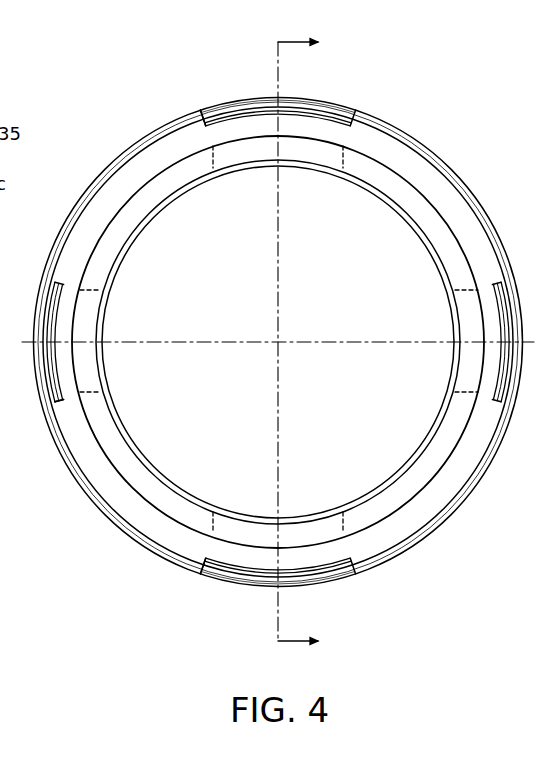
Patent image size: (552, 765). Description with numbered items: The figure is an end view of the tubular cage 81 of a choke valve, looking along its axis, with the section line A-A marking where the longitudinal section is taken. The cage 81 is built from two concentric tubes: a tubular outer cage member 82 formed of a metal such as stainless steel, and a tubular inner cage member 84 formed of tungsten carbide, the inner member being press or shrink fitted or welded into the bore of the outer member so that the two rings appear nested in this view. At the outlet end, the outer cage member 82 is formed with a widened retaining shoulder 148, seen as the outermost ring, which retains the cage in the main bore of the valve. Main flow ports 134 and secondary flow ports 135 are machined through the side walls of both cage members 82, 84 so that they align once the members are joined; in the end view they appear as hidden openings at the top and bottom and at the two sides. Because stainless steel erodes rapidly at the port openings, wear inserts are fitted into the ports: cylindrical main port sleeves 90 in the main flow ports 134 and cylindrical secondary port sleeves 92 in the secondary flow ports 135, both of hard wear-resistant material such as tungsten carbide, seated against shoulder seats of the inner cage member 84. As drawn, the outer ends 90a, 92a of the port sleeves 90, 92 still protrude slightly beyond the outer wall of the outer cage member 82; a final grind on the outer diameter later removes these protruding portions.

The cage 81 is at (272, 342).
The tubular outer cage member 82 is at (414, 200).
The tubular inner cage member 84 is at (410, 165).
The main port sleeve 90 is at (344, 105).
The outer end of main port sleeve 90a is at (207, 108).
The secondary port sleeve 92 is at (50, 280).
The outer end of secondary port sleeve 92a is at (48, 402).
The main flow port 134 is at (228, 163).
The secondary flow port 135 is at (102, 392).
The retaining shoulder 148 is at (455, 185).